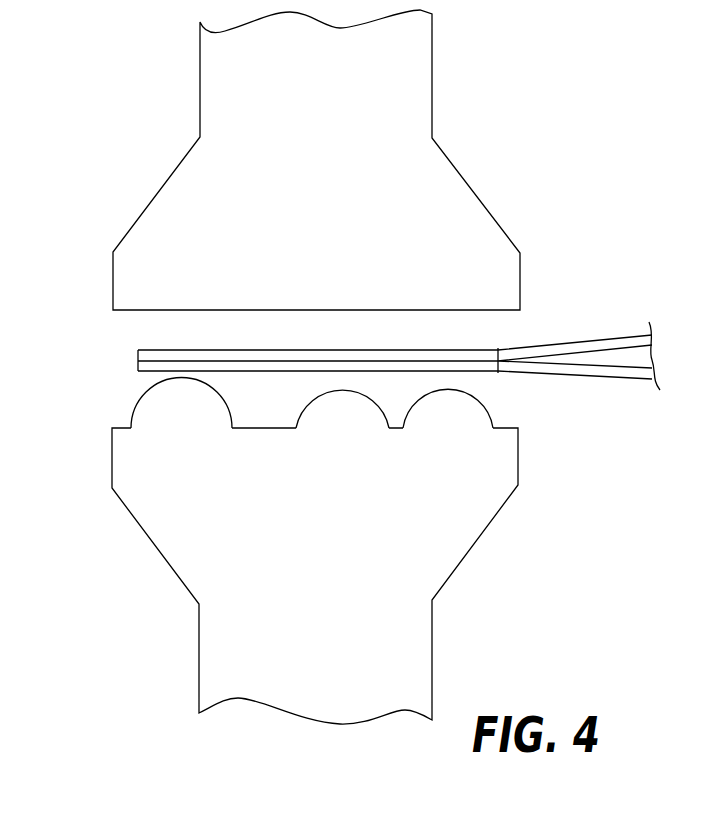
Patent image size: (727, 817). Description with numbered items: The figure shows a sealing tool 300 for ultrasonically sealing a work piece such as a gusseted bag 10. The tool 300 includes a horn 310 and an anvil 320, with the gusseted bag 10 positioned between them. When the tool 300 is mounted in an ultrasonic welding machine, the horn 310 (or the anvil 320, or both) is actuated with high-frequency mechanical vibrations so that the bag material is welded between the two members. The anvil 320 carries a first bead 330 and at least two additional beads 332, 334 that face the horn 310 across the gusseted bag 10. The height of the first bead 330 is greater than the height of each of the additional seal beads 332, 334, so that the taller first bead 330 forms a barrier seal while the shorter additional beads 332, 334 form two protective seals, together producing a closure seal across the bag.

The tool 300 is at (156, 148).
The horn 310 is at (128, 282).
The anvil 320 is at (138, 459).
The first bead 330 is at (140, 400).
The additional bead 332 is at (314, 405).
The additional bead 334 is at (490, 405).
The gusseted bag 10 is at (565, 343).